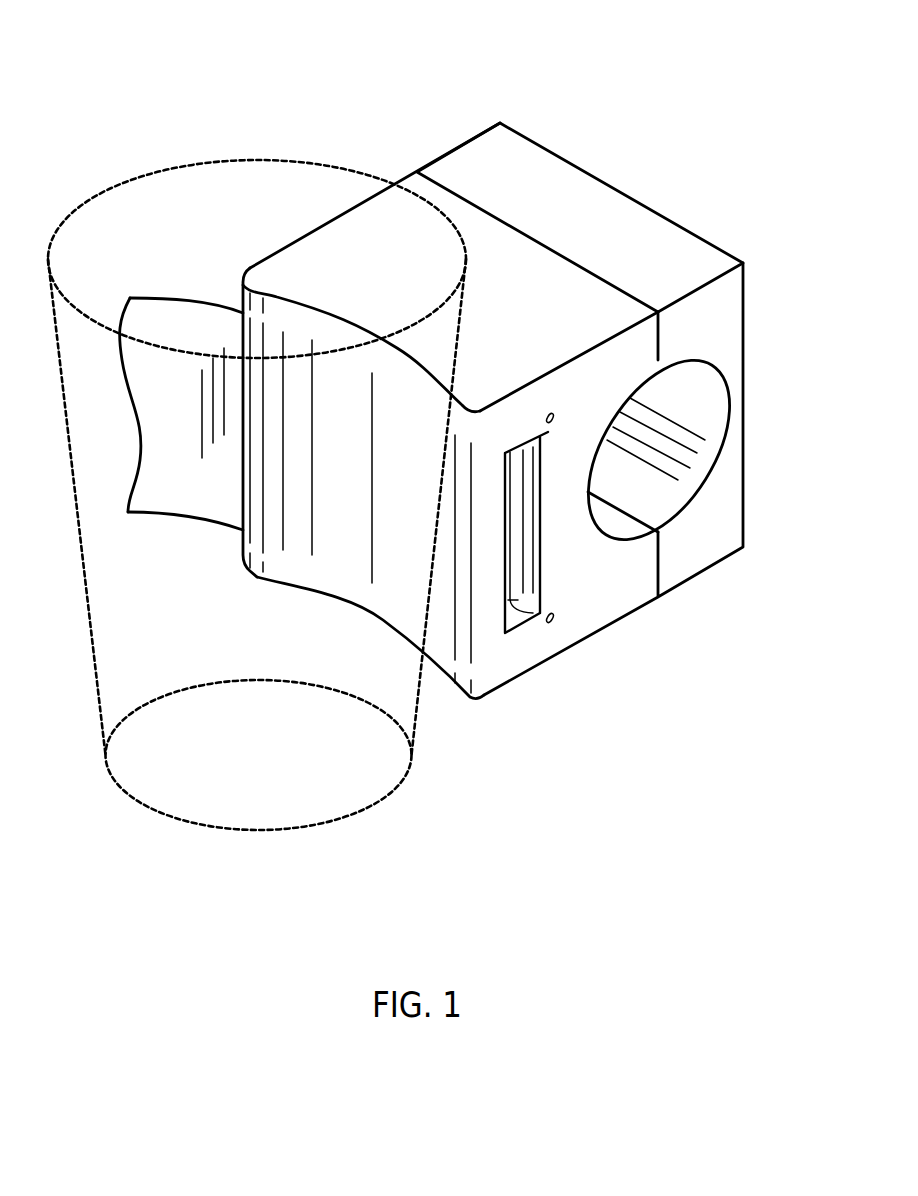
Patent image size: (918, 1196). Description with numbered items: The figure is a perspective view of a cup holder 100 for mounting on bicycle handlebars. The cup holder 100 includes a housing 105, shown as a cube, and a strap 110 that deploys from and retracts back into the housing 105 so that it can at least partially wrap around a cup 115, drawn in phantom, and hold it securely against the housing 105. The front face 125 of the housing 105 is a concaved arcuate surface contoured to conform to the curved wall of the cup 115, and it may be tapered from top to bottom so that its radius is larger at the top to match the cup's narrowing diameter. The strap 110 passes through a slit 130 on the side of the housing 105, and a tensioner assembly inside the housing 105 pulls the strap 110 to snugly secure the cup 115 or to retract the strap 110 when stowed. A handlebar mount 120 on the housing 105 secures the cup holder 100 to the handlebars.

The cup holder 100 is at (190, 57).
The housing 105 is at (447, 153).
The strap 110 is at (188, 518).
The cup 115 is at (178, 820).
The handlebar mount 120 is at (708, 482).
The front face 125 is at (352, 558).
The slit 130 is at (508, 587).